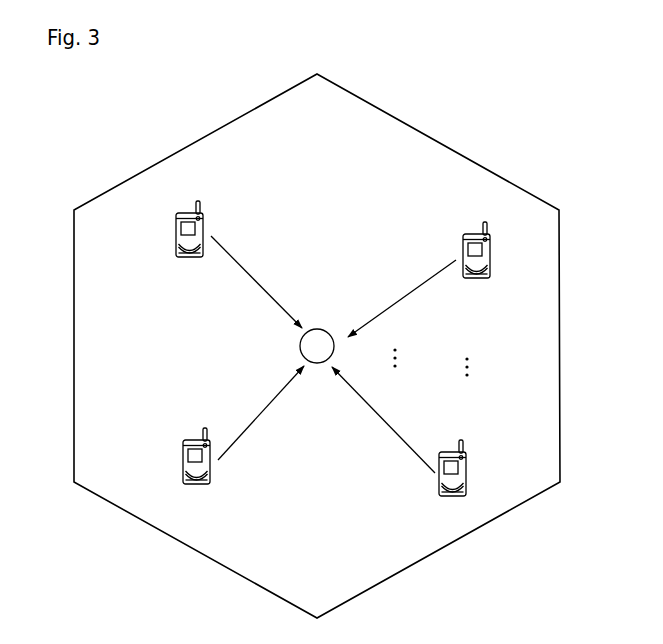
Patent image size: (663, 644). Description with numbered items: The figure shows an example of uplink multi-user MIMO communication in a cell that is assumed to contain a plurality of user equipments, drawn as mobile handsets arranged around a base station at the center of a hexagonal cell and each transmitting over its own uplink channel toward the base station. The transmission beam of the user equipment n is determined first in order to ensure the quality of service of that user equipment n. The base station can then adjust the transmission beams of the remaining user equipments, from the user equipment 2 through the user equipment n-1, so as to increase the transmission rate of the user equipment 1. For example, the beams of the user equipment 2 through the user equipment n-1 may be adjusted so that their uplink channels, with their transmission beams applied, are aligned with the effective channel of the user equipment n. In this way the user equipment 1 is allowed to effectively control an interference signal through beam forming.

The UE # n is at (232, 264).
The UE # n-1 is at (435, 279).
The UE # 1 is at (237, 438).
The UE # 2 is at (406, 444).